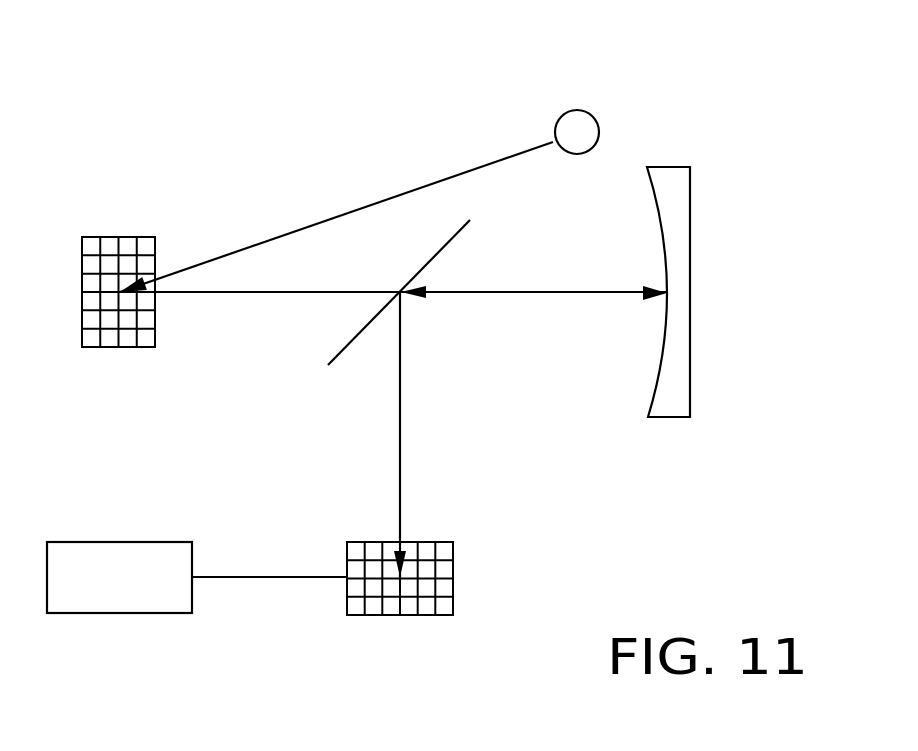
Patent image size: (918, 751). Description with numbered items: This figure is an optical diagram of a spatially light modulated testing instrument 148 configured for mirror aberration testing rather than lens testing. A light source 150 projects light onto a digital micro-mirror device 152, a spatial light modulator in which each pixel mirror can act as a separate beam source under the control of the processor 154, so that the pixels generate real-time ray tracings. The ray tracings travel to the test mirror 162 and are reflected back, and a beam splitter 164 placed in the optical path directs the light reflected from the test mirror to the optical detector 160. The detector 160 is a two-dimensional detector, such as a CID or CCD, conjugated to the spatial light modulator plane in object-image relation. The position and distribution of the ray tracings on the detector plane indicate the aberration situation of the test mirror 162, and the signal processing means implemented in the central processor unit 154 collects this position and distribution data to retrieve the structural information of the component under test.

The testing instrument 148 is at (672, 512).
The light source 150 is at (578, 122).
The digital micro-mirror device 152 is at (127, 247).
The processor 154 is at (120, 605).
The optical detector 160 is at (408, 610).
The mirror 162 is at (678, 352).
The beam splitter 164 is at (443, 248).